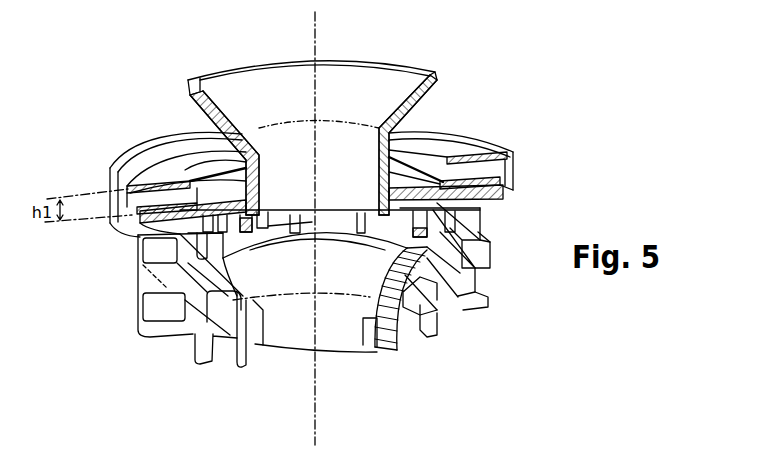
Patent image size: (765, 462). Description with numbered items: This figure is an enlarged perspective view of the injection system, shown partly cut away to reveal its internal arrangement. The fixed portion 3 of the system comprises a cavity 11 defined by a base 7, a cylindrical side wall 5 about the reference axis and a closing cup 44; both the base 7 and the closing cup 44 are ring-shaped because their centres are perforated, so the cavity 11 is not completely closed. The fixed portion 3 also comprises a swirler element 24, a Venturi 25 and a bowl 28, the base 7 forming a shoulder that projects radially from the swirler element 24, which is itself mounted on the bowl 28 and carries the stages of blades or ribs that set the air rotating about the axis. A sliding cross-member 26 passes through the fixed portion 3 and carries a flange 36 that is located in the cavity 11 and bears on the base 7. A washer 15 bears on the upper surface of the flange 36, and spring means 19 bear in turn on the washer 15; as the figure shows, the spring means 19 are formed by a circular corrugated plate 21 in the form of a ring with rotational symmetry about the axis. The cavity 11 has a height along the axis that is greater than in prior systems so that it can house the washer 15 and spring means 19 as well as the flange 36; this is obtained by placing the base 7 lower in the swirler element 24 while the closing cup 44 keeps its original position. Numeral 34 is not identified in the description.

The fixed portion 3 is at (138, 260).
The side wall 5 is at (507, 187).
The base 7 is at (490, 205).
The cavity 11 is at (498, 167).
The washer 15 is at (113, 208).
The spring means 19 is at (117, 190).
The circular corrugated plate 21 is at (152, 196).
The swirler element 24 is at (480, 255).
The Venturi 25 is at (370, 345).
The sliding cross-member 26 is at (385, 83).
The bowl 28 is at (262, 348).
The flange section 34 is at (480, 187).
The flange 36 is at (132, 236).
The closing cup 44 is at (466, 148).